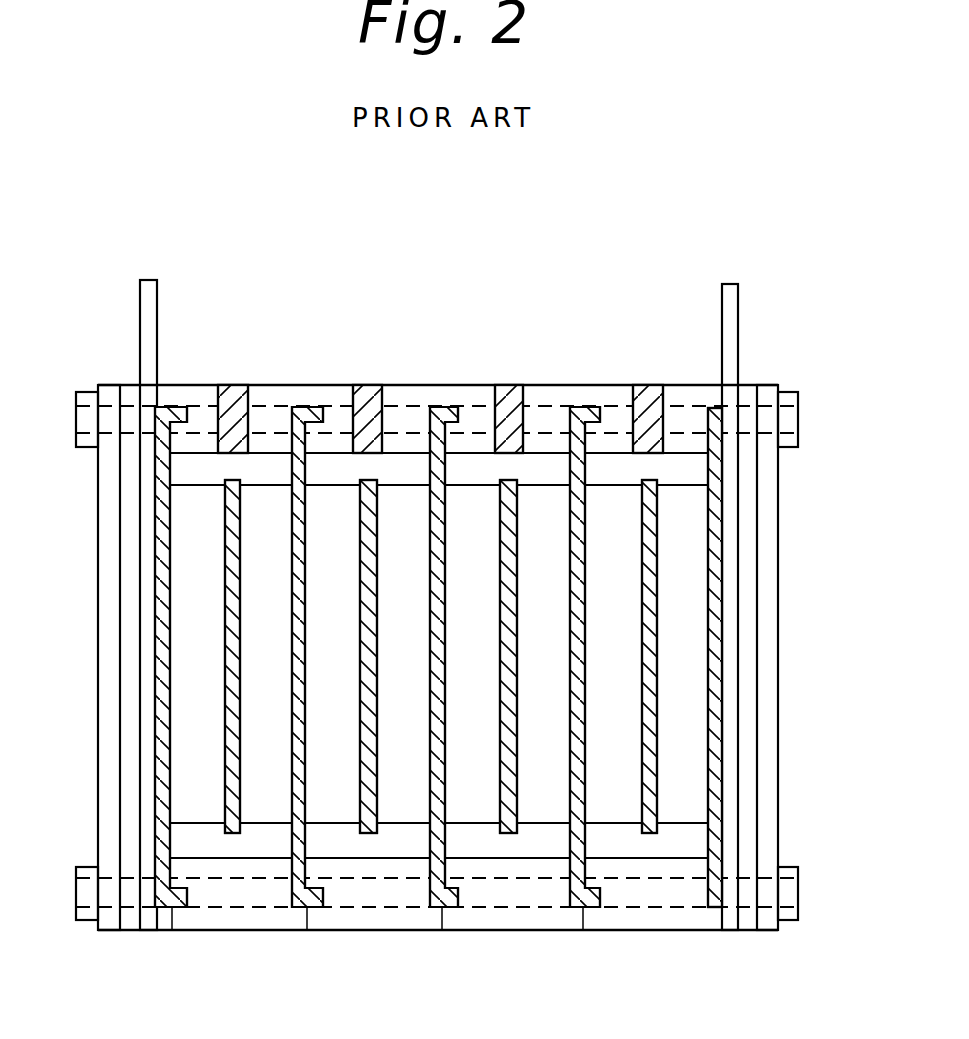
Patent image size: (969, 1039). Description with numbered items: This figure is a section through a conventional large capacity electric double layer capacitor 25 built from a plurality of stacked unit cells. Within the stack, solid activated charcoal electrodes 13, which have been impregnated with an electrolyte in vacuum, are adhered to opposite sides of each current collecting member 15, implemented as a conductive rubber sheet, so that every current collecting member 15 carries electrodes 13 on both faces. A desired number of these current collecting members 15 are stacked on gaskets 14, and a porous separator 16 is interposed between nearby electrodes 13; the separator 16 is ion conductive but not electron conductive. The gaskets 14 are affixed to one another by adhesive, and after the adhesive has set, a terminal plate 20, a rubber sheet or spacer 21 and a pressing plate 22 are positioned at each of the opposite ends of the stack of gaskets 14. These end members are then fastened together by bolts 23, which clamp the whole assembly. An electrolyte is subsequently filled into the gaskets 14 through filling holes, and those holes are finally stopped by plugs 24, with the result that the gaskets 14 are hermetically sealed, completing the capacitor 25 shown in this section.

The electrodes 13 is at (345, 790).
The gaskets 14 is at (194, 394).
The current collecting member 15 is at (716, 707).
The porous separator 16 is at (345, 578).
The terminal plate 20 is at (149, 283).
The rubber sheet or spacer 21 is at (120, 497).
The pressing plate 22 is at (110, 551).
The bolts 23 is at (90, 392).
The plugs 24 is at (230, 385).
The electric double layer capacitor 25 is at (727, 223).